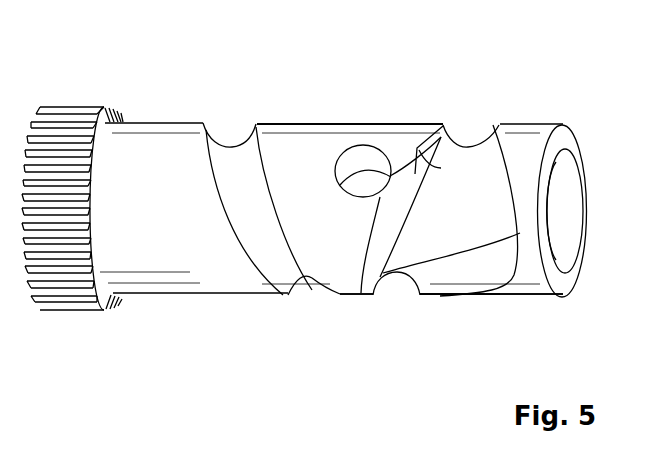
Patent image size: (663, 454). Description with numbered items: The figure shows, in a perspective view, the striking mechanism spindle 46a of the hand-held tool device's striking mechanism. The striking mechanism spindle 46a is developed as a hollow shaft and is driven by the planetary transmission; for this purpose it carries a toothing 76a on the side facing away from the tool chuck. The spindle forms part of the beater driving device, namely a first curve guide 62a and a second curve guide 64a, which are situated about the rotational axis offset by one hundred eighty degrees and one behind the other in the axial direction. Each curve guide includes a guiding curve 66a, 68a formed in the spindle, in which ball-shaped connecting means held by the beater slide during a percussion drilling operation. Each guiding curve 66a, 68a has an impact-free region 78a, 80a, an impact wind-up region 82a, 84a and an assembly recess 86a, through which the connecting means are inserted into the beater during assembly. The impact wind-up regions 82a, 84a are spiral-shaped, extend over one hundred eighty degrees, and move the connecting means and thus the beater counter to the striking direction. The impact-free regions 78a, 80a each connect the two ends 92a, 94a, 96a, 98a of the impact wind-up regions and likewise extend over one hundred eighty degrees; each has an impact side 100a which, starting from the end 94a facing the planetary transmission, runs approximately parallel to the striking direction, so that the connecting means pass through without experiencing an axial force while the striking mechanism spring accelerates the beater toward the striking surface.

The striking mechanism spindle 46a is at (576, 106).
The toothing 76a is at (94, 106).
The end of impact wind-up region 96a is at (236, 113).
The impact-free region 80a is at (271, 113).
The assembly recess 86a is at (366, 144).
The guiding curve 68a is at (252, 262).
The second curve guide 64a is at (280, 328).
The impact wind-up region 84a is at (302, 302).
The end of impact wind-up region 98a is at (318, 302).
The impact wind-up region 82a is at (461, 120).
The end of impact wind-up region 92a is at (477, 120).
The end of impact wind-up region 94a is at (394, 303).
The guiding curve 66a is at (467, 217).
The impact-free region 78a is at (461, 279).
The impact side 100a is at (487, 271).
The first curve guide 62a is at (429, 318).